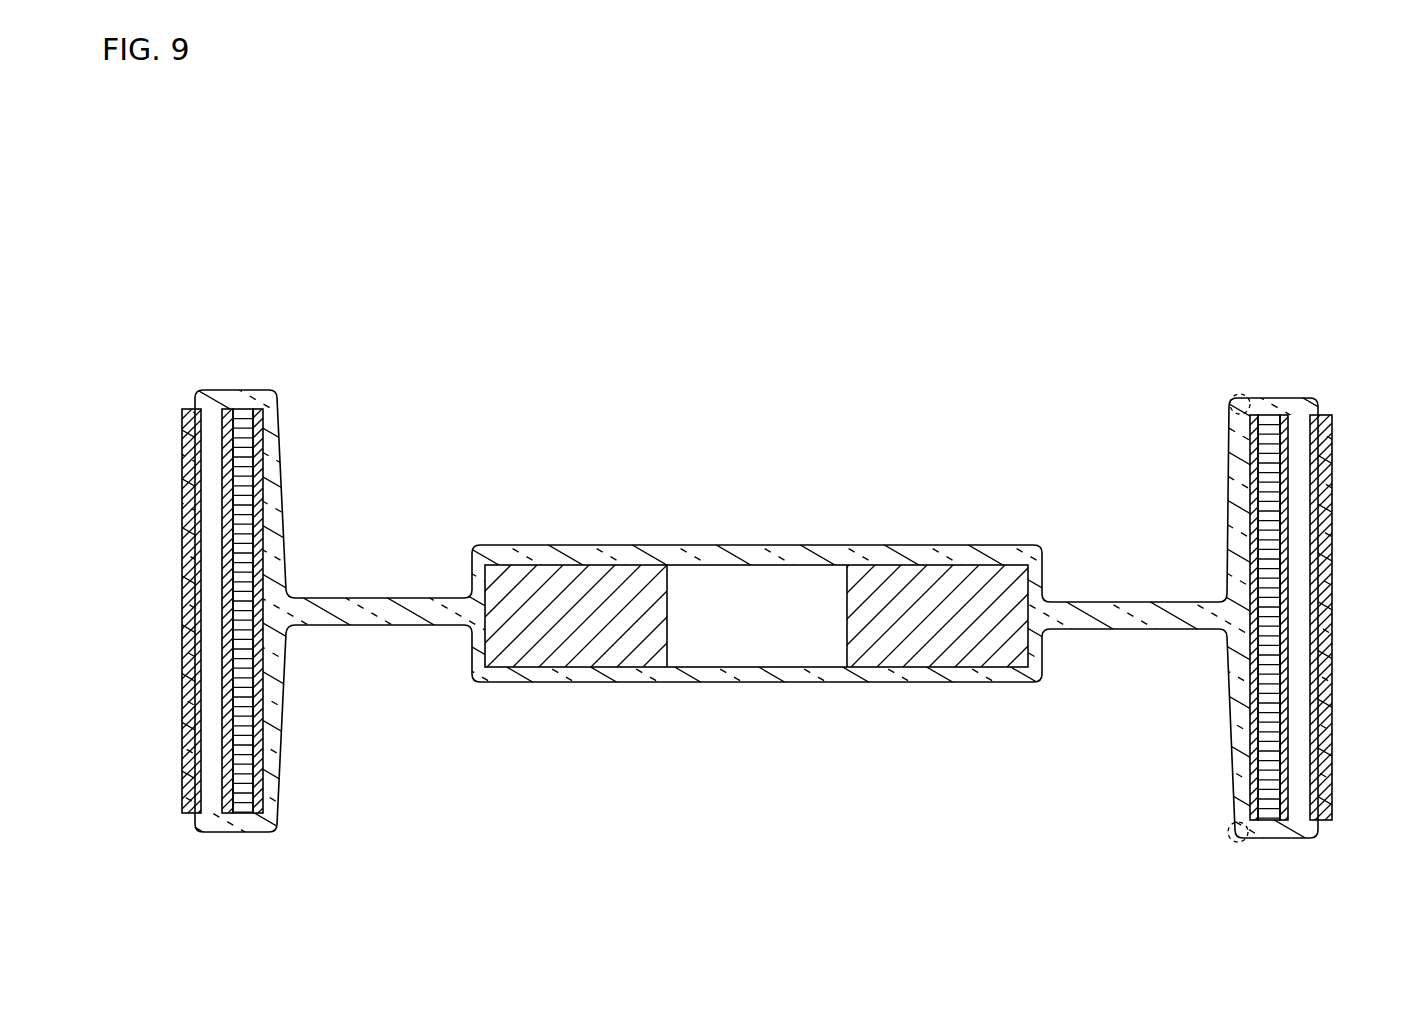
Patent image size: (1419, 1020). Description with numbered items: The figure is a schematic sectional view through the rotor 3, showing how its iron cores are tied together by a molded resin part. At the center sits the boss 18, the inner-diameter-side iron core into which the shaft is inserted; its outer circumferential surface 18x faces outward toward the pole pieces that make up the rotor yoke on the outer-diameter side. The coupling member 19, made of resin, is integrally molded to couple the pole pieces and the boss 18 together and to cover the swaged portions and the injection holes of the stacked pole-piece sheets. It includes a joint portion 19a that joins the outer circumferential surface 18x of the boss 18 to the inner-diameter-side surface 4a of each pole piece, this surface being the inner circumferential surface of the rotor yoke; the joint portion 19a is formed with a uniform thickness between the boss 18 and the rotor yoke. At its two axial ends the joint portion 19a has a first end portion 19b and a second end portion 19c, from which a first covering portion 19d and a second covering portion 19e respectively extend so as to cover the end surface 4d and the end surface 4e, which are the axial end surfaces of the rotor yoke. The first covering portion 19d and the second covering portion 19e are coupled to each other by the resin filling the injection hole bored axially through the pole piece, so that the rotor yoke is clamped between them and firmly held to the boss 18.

The rotor 3 is at (545, 190).
The boss 18 is at (927, 572).
The outer circumferential surface 18x is at (1043, 666).
The coupling member 19 is at (237, 820).
The joint portion 19a is at (1183, 608).
The first end portion 19b is at (1230, 399).
The second end portion 19c is at (1227, 839).
The first covering portion 19d is at (1296, 415).
The second covering portion 19e is at (1268, 832).
The inner-diameter-side surface 4a is at (1234, 715).
The end surface 4d is at (1283, 415).
The end surface 4e is at (1292, 842).